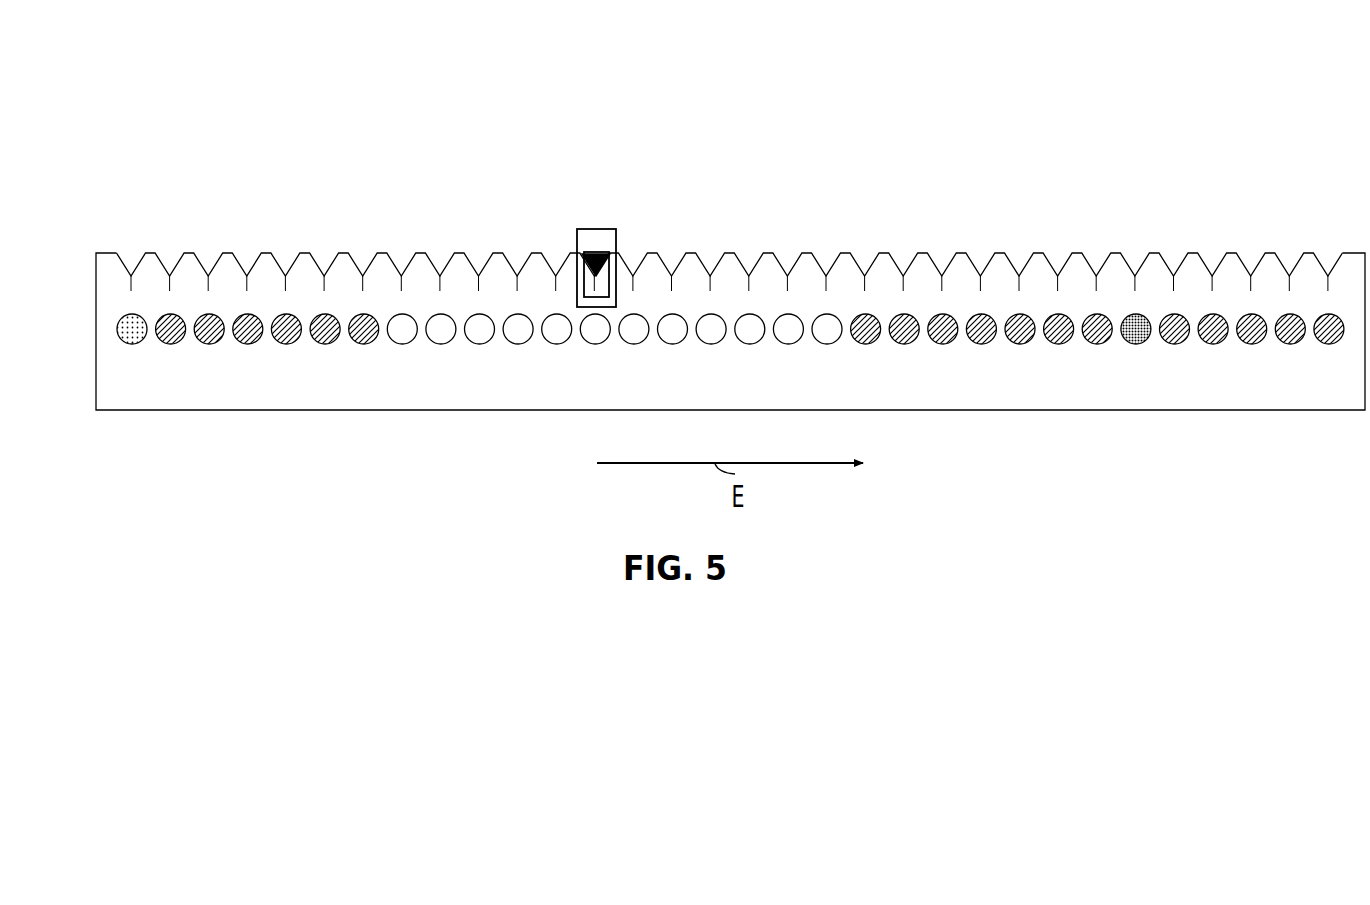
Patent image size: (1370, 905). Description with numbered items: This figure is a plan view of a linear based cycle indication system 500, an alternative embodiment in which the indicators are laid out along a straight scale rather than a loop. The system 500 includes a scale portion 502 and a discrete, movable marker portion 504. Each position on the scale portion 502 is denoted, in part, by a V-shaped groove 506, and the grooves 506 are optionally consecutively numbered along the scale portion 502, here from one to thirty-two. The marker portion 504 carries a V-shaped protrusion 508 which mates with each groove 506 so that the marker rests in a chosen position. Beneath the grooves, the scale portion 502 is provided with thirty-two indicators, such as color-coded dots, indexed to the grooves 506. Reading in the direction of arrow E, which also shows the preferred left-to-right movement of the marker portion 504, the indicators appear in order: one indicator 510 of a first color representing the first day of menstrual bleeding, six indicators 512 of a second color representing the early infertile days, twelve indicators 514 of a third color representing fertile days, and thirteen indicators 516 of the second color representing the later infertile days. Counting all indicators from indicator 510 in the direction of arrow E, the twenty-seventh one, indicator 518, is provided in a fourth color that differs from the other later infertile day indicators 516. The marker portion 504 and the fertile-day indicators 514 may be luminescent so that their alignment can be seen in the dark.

The linear based cycle indication system 500 is at (310, 78).
The scale portion 502 is at (123, 373).
The movable marker portion 504 is at (602, 232).
The V-shaped groove 506 is at (281, 257).
The V-shaped protrusion 508 is at (583, 264).
The indicator of a first color 510 is at (117, 324).
The indicators of a second color 512 is at (155, 338).
The indicators of a third color 514 is at (388, 338).
The indicators of the second color 516 is at (851, 338).
The indicator of a fourth color 518 is at (1140, 306).